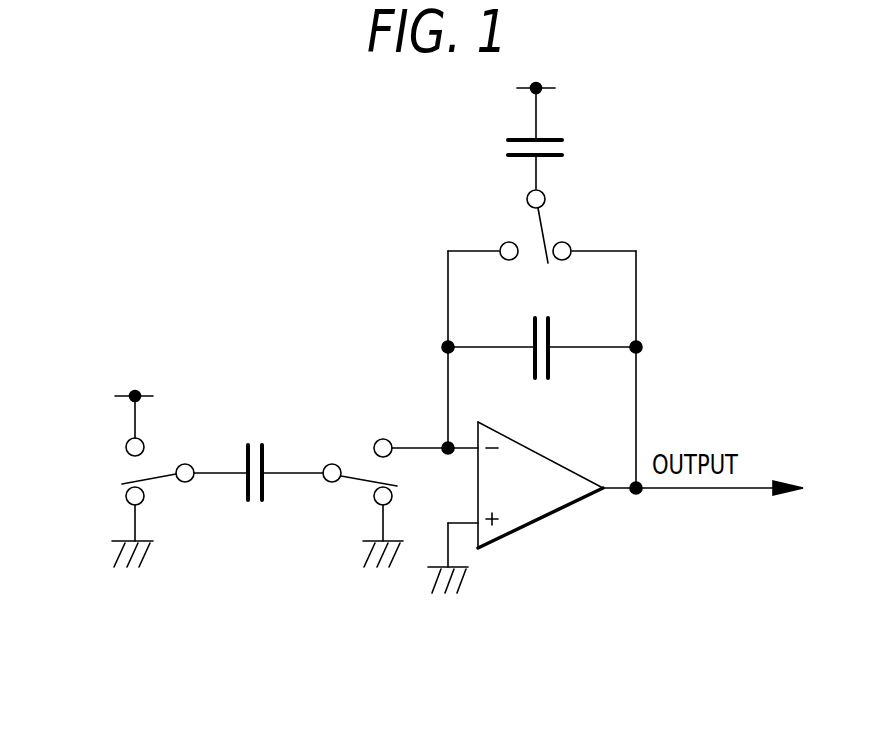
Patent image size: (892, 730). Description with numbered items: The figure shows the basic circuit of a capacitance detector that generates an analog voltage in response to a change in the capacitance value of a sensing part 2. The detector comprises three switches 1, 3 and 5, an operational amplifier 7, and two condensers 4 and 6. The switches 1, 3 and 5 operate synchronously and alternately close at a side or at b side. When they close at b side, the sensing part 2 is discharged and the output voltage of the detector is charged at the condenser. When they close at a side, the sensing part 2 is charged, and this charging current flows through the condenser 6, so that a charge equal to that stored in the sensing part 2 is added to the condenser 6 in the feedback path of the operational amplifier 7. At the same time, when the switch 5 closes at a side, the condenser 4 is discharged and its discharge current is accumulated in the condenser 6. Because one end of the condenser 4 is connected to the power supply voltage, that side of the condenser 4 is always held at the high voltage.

The switch 1 is at (157, 478).
The sensing part 2 is at (262, 456).
The switch 3 is at (353, 478).
The condenser 4 is at (553, 137).
The switch 5 is at (543, 235).
The condenser 6 is at (549, 330).
The operational amplifier 7 is at (522, 492).